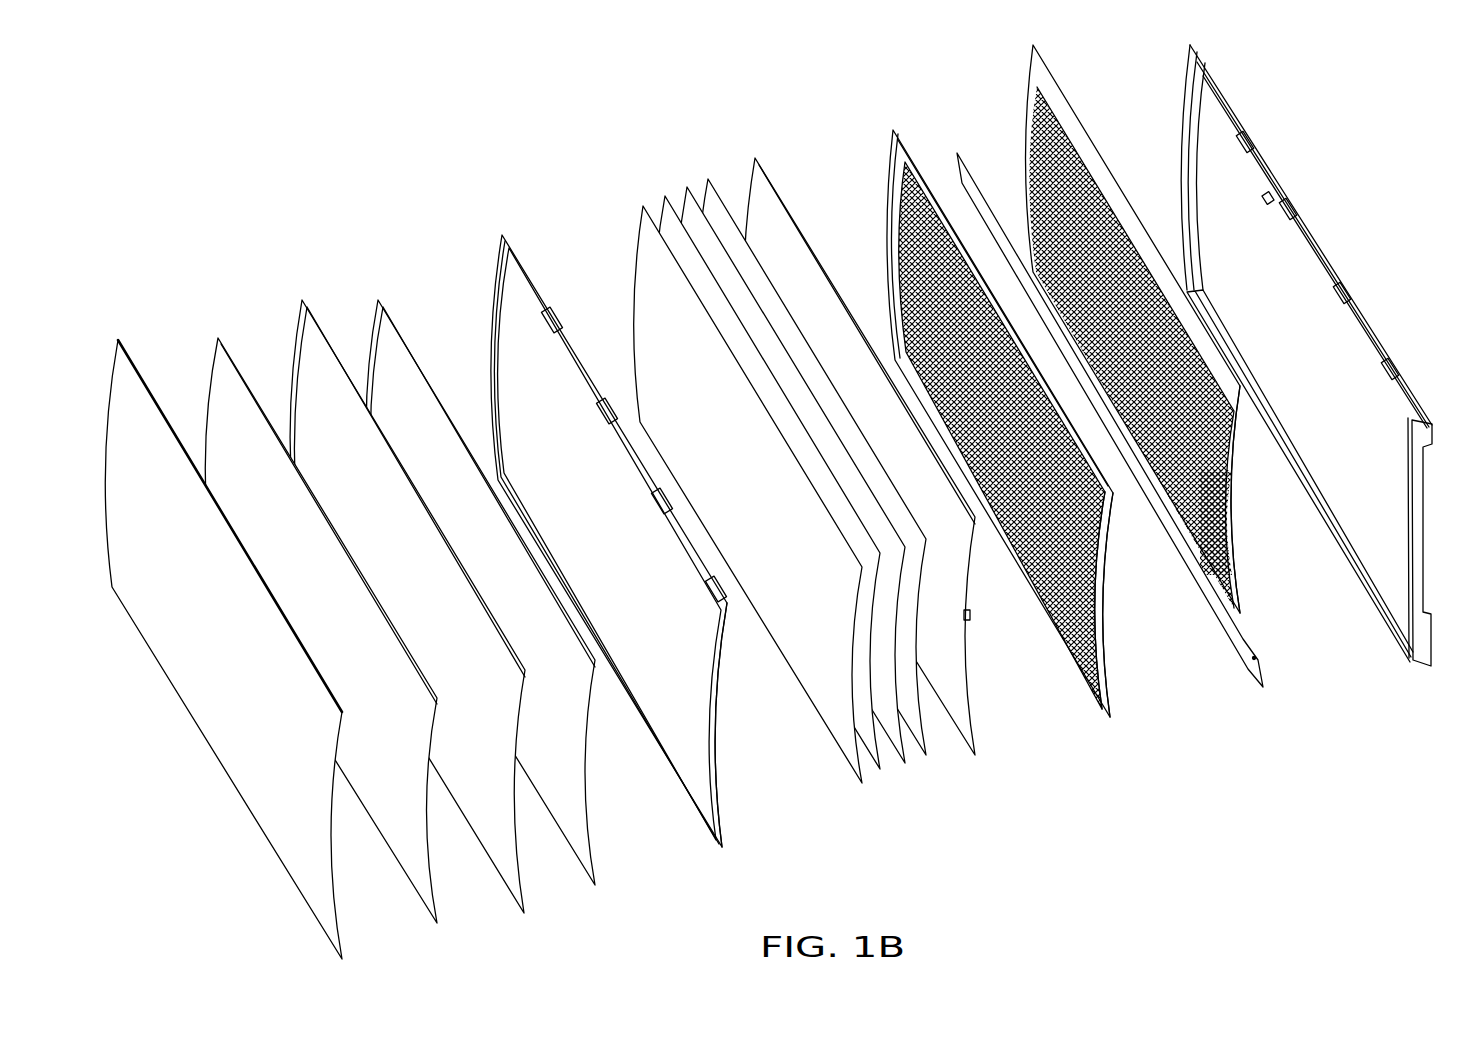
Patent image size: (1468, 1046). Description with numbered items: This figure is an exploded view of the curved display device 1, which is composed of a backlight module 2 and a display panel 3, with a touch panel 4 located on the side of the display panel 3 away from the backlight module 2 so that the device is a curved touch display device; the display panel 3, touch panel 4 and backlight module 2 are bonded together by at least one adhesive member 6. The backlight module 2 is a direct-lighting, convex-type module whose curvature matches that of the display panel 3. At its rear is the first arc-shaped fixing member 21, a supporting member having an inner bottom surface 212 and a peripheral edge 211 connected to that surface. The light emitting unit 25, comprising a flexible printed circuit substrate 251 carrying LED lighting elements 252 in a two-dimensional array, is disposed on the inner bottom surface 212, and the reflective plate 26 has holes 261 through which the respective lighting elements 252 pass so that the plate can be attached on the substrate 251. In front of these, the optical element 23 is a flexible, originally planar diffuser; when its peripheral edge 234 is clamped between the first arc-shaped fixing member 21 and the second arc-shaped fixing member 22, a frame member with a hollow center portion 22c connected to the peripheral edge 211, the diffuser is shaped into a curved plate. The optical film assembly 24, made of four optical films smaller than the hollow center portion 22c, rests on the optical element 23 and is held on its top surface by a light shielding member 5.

The display device 1 is at (768, 502).
The backlight module 2 is at (961, 452).
The first arc-shaped fixing member 21 is at (1271, 355).
The peripheral edge 211 is at (1187, 141).
The inner bottom surface 212 is at (1266, 199).
The second arc-shaped fixing member 22 is at (639, 515).
The hollow center portion 22c is at (736, 725).
The optical element 23 is at (859, 430).
The peripheral edge 234 is at (816, 250).
The optical film assembly 24 is at (717, 171).
The light emitting unit 25 is at (1178, 329).
The substrate 251 is at (1238, 488).
The lighting elements 252 is at (1237, 533).
The reflective plate 26 is at (1047, 423).
The holes 261 is at (1109, 578).
The display panel 3 is at (229, 336).
The touch panel 4 is at (140, 358).
The light shielding member 5 is at (390, 311).
The adhesive member 6 is at (315, 328).